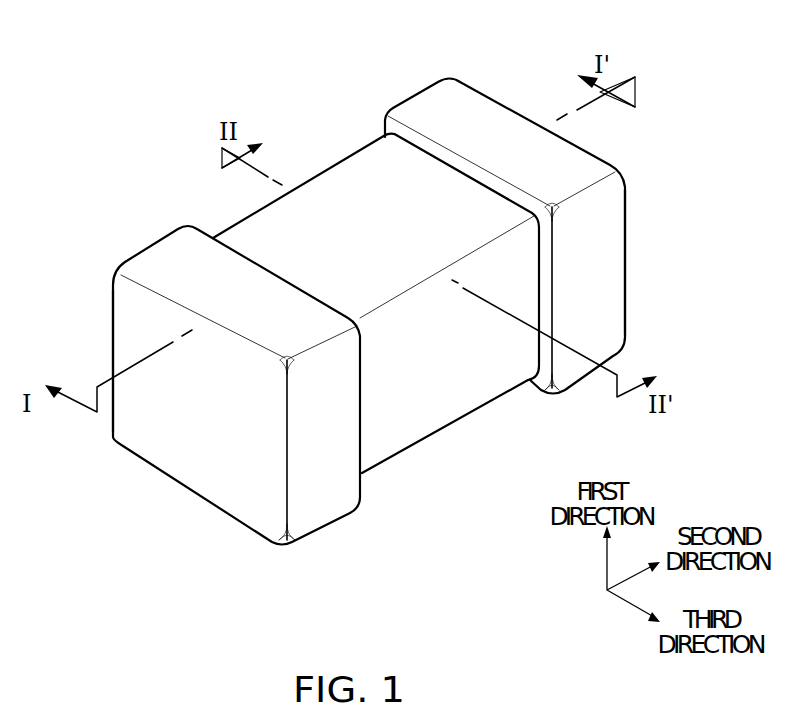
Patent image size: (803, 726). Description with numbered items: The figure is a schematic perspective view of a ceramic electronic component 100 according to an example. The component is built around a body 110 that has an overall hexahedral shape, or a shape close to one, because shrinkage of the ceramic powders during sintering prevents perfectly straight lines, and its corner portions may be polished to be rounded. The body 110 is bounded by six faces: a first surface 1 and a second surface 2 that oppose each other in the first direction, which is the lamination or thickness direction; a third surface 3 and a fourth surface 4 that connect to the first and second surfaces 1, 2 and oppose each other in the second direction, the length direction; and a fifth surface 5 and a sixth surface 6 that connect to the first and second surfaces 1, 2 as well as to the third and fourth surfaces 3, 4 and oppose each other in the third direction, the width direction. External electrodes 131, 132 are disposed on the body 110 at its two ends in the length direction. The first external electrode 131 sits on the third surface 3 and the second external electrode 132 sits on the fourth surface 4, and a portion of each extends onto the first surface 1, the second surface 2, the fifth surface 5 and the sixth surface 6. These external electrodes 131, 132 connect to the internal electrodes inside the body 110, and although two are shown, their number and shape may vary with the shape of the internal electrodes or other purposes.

The ceramic electronic component 100 is at (152, 45).
The body 110 is at (248, 243).
The first external electrode 131 is at (173, 258).
The second external electrode 132 is at (427, 112).
The first surface 1 is at (410, 395).
The second surface 2 is at (387, 195).
The third surface 3 is at (205, 441).
The fourth surface 4 is at (575, 249).
The fifth surface 5 is at (330, 213).
The sixth surface 6 is at (468, 368).